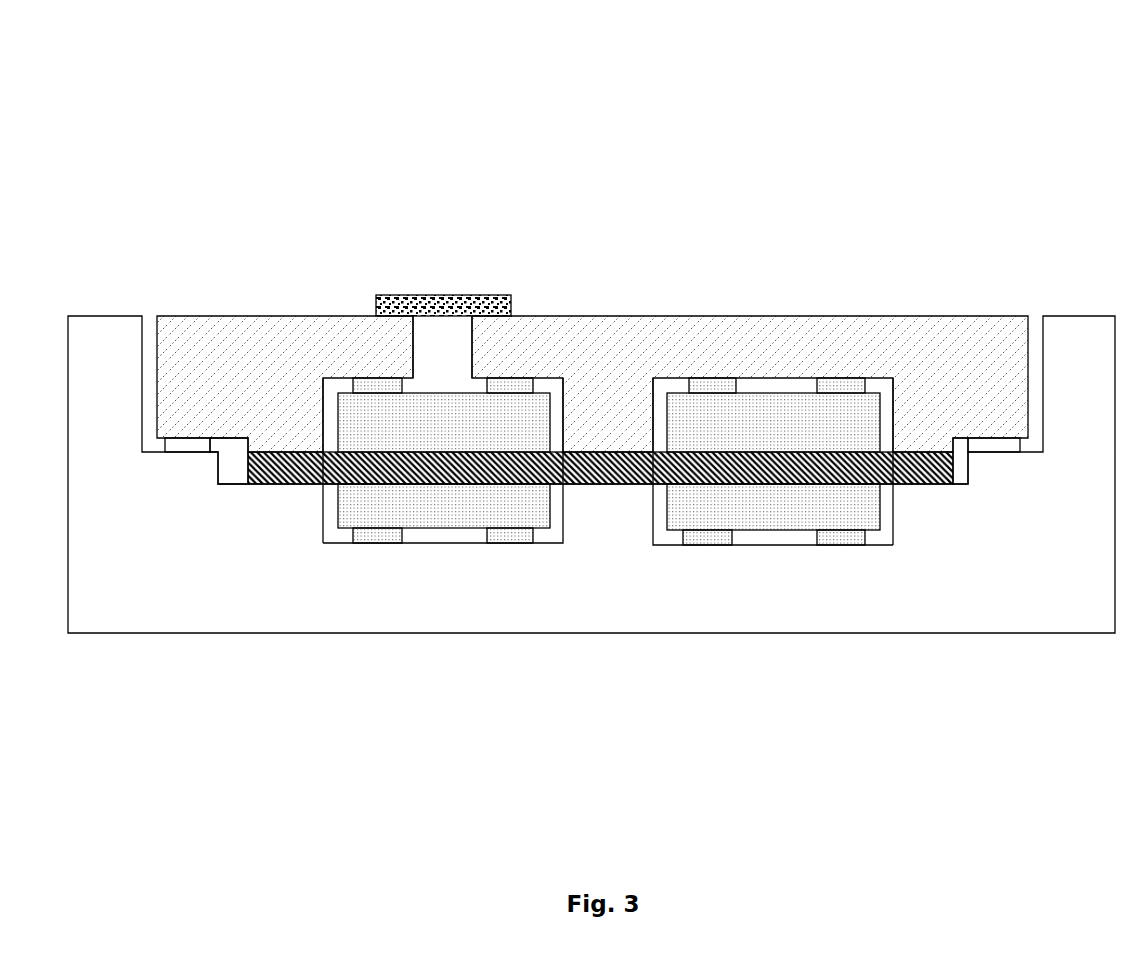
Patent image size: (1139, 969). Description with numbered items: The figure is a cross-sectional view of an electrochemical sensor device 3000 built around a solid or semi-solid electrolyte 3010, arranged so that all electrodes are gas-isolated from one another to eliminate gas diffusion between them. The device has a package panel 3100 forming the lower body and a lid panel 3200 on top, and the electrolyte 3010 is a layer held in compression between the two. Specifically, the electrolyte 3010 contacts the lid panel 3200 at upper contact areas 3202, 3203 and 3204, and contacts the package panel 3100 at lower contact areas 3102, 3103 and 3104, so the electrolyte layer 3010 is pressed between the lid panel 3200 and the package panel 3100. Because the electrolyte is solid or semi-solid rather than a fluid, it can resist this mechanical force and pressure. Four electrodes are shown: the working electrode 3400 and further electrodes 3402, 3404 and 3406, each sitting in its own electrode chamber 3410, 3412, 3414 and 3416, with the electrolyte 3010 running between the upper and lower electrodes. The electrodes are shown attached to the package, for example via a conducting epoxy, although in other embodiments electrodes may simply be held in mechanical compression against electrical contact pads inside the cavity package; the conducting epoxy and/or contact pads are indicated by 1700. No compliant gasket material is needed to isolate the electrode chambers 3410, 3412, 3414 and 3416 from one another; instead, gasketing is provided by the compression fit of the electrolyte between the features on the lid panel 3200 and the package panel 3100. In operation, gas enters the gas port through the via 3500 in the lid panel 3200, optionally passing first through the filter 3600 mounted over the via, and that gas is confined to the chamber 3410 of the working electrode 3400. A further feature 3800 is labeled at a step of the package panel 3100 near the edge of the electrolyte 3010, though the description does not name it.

The electrochemical sensor device 3000 is at (150, 68).
The package panel 3100 is at (140, 556).
The lid panel 3200 is at (178, 366).
The upper contact area 3202 is at (285, 443).
The upper contact area 3203 is at (593, 443).
The upper contact area 3204 is at (938, 443).
The electrolyte 3010 is at (621, 451).
The working electrode 3400 is at (422, 436).
The electrode 3402 is at (422, 516).
The electrode 3404 is at (751, 436).
The electrode 3406 is at (751, 516).
The electrode chamber 3410 is at (336, 385).
The electrode chamber 3412 is at (333, 548).
The electrode chamber 3414 is at (886, 376).
The electrode chamber 3416 is at (663, 548).
The via 3500 is at (443, 345).
The filter 3600 is at (409, 293).
The conducting epoxy or contact pads 1700 is at (514, 377).
The lower contact area 3102 is at (278, 496).
The lower contact area 3103 is at (587, 495).
The lower contact area 3104 is at (932, 496).
The substrate step surface 3800 is at (998, 455).